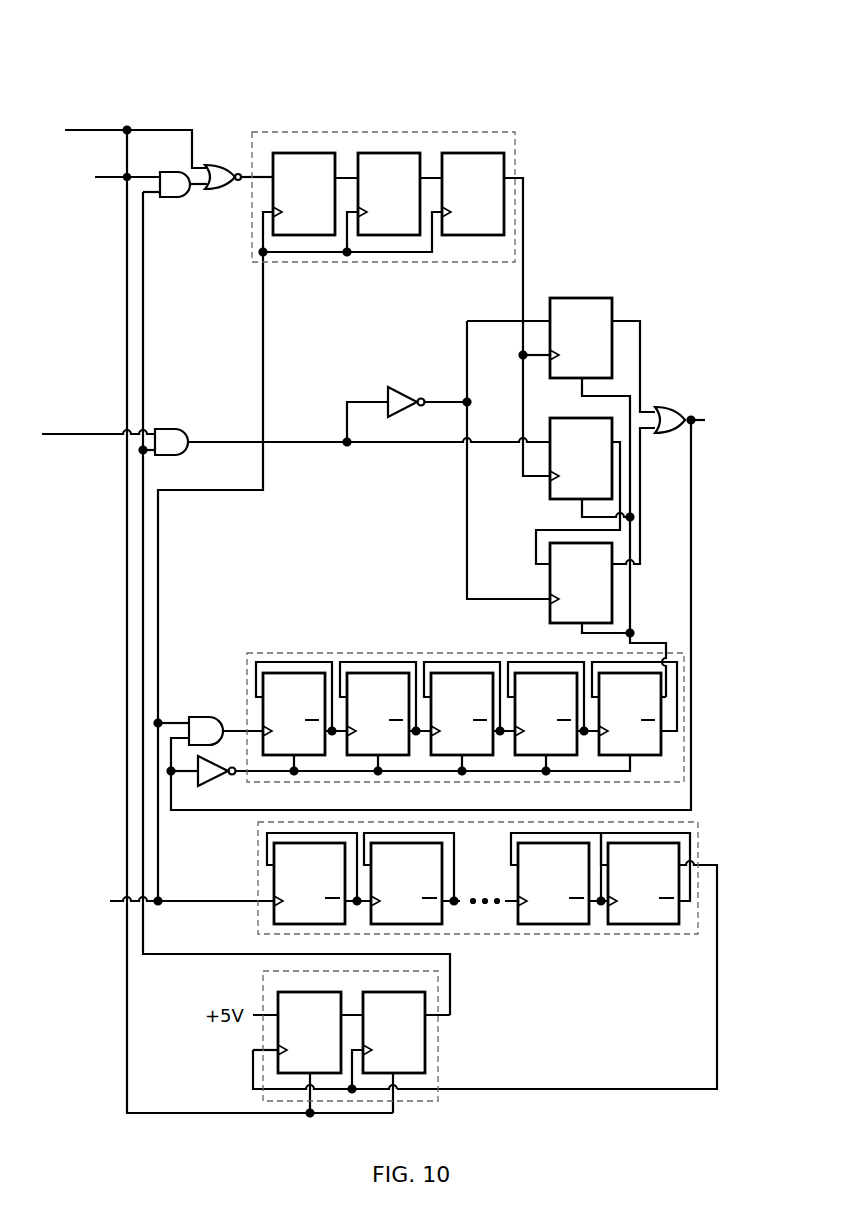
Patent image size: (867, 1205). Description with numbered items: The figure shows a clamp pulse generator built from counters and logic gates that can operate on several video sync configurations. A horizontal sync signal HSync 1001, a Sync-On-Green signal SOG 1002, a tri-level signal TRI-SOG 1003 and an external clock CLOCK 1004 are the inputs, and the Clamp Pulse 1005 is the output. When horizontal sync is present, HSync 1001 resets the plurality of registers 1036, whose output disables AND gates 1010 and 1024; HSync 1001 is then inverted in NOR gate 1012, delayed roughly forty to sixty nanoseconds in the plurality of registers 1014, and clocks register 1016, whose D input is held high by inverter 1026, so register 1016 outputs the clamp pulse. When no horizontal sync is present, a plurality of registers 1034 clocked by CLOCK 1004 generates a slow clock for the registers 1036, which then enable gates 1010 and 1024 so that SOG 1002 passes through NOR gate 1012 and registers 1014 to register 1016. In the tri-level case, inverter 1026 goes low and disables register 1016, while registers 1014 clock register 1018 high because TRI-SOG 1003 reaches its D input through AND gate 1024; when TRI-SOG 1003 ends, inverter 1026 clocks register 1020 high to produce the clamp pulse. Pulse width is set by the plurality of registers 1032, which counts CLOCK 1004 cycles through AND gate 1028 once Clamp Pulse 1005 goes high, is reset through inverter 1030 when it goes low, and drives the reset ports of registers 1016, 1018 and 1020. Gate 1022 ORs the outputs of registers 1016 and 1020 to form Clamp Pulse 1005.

The horizontal sync signal 1001 is at (74, 130).
The Sync-On-Green signal 1002 is at (79, 203).
The tri-level Sync-On-Green signal 1003 is at (73, 401).
The external clock 1004 is at (73, 896).
The Clamp Pulse 1005 is at (735, 402).
The AND gate 1010 is at (172, 198).
The NOR gate 1012 is at (229, 166).
The plurality of registers 1014 is at (516, 143).
The register 1016 is at (580, 298).
The register 1018 is at (597, 418).
The register 1020 is at (550, 583).
The OR gate 1022 is at (672, 408).
The AND gate 1024 is at (170, 429).
The inverter 1026 is at (406, 388).
The AND gate 1028 is at (200, 717).
The inverter 1030 is at (214, 782).
The plurality of registers 1032 is at (684, 752).
The plurality of registers 1034 is at (698, 858).
The plurality of registers 1036 is at (438, 1067).